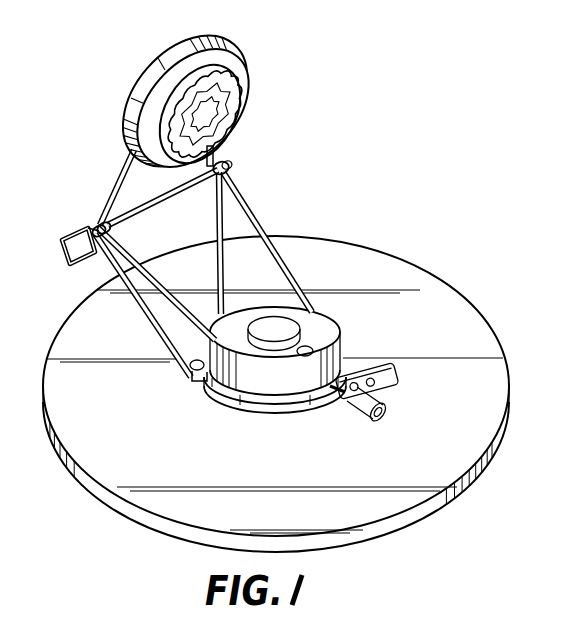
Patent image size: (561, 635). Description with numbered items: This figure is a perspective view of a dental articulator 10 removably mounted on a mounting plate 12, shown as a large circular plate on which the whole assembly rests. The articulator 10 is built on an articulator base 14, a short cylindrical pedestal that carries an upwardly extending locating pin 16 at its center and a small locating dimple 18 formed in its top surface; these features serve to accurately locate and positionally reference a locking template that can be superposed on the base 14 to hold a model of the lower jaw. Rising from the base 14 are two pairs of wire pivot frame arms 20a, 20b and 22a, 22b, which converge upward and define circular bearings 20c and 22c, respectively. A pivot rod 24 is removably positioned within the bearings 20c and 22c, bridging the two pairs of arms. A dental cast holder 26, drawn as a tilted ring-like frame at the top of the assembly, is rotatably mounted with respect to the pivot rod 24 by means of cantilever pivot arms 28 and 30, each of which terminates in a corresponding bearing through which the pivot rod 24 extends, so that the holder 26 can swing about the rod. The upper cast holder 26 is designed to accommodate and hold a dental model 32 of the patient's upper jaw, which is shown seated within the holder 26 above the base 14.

The dental articulator 10 is at (282, 191).
The mounting plate 12 is at (497, 392).
The articulator base 14 is at (290, 386).
The locating pin 16 is at (300, 322).
The locating dimple 18 is at (318, 350).
The wire pivot frame arm 20a is at (160, 332).
The wire pivot frame arm 20b is at (150, 270).
The circular bearing 20c is at (97, 225).
The wire pivot frame arm 22a is at (262, 227).
The wire pivot frame arm 22b is at (217, 232).
The circular bearing 22c is at (231, 166).
The pivot rod 24 is at (146, 214).
The dental cast holder 26 is at (240, 62).
The cantilever pivot arm 28 is at (122, 186).
The cantilever pivot arm 30 is at (214, 152).
The dental model 32 is at (232, 74).